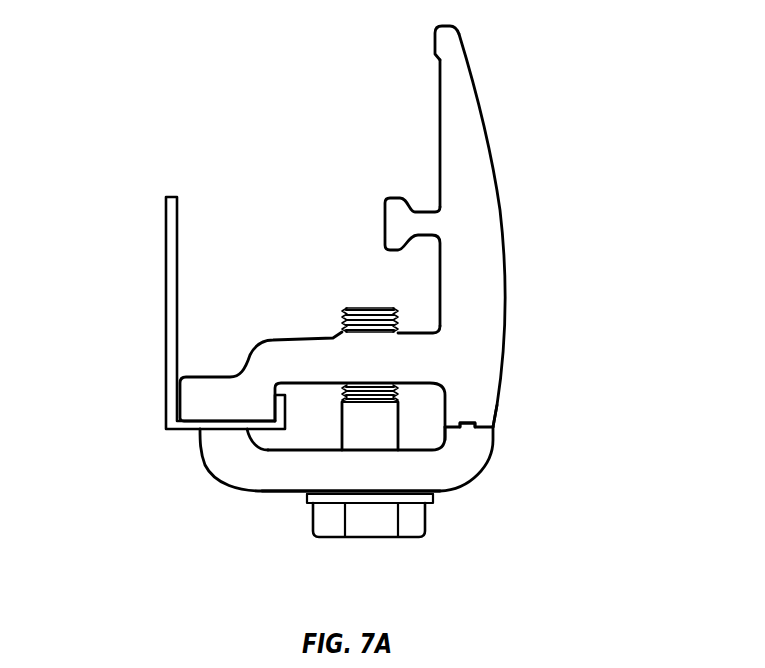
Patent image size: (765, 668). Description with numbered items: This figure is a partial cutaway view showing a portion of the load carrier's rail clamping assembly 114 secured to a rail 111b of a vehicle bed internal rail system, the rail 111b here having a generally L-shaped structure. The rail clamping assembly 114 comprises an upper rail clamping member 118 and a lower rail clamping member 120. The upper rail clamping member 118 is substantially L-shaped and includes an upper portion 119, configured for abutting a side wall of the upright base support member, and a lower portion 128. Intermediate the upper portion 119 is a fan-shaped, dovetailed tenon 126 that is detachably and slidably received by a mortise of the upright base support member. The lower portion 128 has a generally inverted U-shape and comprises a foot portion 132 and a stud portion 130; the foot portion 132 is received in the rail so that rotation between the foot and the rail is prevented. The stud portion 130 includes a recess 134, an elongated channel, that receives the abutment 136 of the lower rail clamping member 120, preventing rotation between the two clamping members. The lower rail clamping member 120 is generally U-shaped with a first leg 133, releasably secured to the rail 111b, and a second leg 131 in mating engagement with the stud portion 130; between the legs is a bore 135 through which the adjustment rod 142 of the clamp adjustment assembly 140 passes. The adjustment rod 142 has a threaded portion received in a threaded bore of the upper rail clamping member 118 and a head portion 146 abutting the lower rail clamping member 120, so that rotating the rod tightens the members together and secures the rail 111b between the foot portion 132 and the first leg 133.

The rail 111b is at (170, 303).
The rail clamping assembly 114 is at (578, 415).
The upper rail clamping member 118 is at (492, 277).
The upper portion 119 is at (470, 137).
The lower rail clamping member 120 is at (313, 470).
The tenon 126 is at (392, 225).
The lower portion 128 is at (368, 363).
The stud portion 130 is at (470, 403).
The second leg 131 is at (470, 447).
The foot portion 132 is at (220, 398).
The first leg 133 is at (230, 457).
The recess 134 is at (477, 417).
The bore 135 is at (382, 470).
The abutment 136 is at (480, 440).
The clamp adjustment assembly 140 is at (493, 512).
The adjustment rod 142 is at (387, 420).
The head portion 146 is at (410, 530).